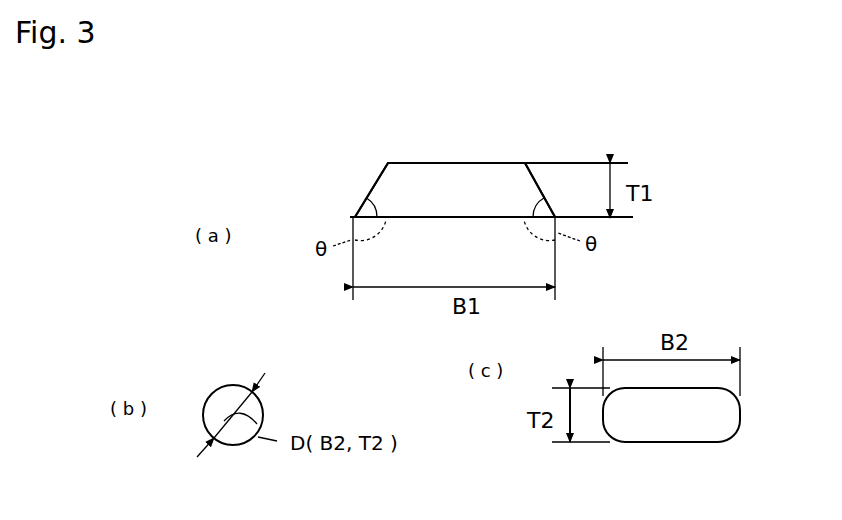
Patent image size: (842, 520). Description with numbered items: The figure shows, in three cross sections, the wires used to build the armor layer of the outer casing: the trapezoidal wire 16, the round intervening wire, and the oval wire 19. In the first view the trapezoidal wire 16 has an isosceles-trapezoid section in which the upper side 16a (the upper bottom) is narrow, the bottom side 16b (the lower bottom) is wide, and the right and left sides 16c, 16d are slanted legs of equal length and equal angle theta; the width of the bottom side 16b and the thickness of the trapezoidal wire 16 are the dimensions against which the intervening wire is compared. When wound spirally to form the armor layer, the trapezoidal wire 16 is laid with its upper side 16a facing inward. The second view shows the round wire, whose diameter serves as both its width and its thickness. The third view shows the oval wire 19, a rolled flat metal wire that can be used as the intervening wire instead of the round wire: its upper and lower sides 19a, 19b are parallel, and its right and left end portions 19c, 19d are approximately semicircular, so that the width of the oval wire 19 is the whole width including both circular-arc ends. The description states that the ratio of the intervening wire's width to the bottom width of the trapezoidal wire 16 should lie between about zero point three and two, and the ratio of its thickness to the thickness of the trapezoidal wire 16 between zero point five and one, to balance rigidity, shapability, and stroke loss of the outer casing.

The trapezoidal wire 16 is at (424, 160).
The upper side 16a is at (483, 162).
The bottom side 16b is at (418, 217).
The left side 16c is at (363, 187).
The right side 16d is at (533, 180).
The oval wire 19 is at (704, 445).
The upper side 19a is at (745, 380).
The lower side 19b is at (665, 442).
The left end portion 19c is at (608, 430).
The right end portion 19d is at (738, 428).